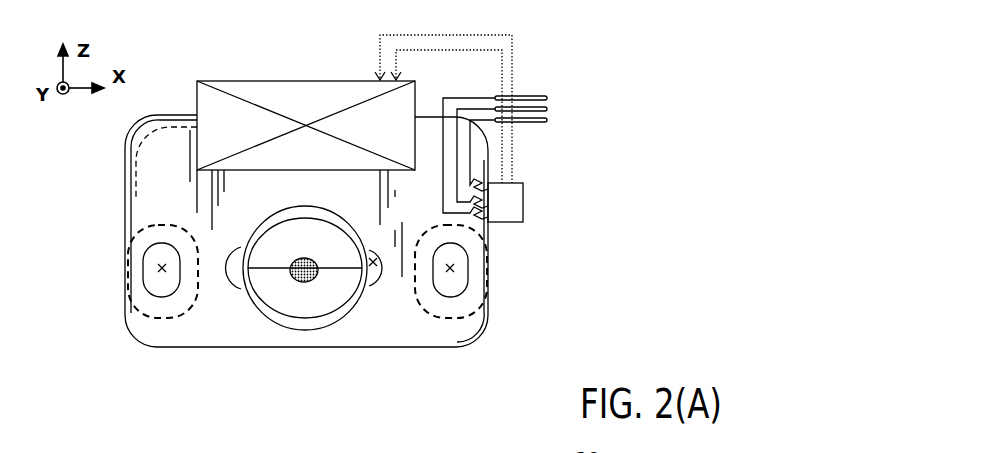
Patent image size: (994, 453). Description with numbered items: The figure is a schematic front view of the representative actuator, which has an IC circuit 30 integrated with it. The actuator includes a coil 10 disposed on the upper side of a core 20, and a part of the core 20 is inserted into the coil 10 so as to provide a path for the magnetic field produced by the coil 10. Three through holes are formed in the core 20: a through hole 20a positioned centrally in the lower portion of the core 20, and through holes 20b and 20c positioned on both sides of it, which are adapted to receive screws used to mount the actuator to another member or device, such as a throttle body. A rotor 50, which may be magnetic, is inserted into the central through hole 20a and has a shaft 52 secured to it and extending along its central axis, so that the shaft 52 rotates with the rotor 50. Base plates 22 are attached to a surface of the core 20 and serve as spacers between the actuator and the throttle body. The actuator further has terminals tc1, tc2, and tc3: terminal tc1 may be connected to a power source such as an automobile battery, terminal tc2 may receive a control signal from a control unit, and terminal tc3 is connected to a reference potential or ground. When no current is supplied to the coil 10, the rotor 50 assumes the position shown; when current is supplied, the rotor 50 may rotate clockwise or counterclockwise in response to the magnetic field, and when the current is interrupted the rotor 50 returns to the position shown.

The coil 10 is at (284, 96).
The core 20 is at (226, 336).
The through hole 20a is at (373, 272).
The through hole 20b is at (160, 276).
The through hole 20c is at (458, 258).
The base plates 22 is at (168, 329).
The IC circuit 30 is at (510, 206).
The rotor 50 is at (280, 294).
The shaft 52 is at (320, 277).
The terminal tc1 is at (556, 97).
The terminal tc2 is at (556, 108).
The terminal tc3 is at (556, 121).